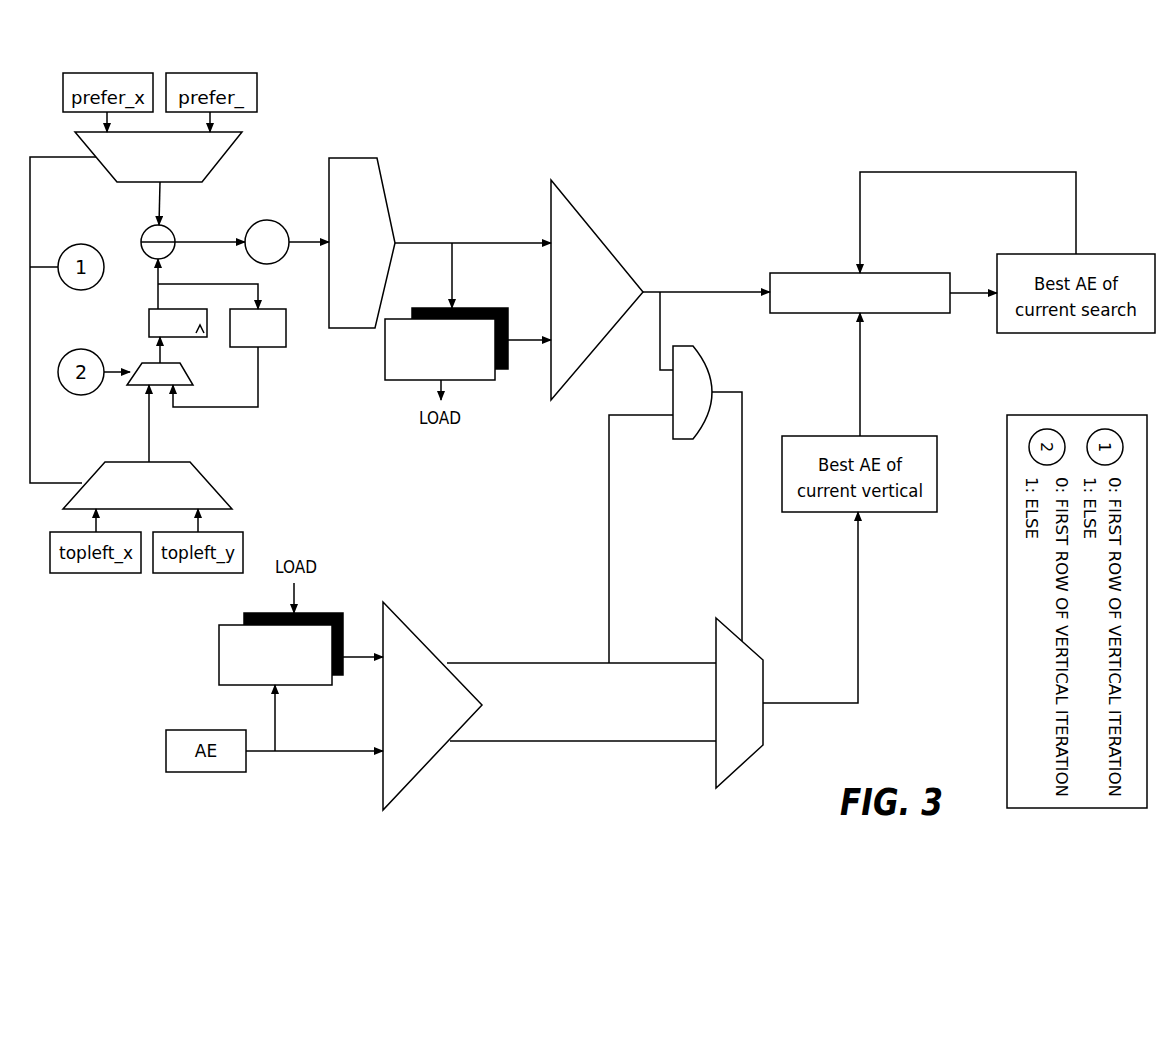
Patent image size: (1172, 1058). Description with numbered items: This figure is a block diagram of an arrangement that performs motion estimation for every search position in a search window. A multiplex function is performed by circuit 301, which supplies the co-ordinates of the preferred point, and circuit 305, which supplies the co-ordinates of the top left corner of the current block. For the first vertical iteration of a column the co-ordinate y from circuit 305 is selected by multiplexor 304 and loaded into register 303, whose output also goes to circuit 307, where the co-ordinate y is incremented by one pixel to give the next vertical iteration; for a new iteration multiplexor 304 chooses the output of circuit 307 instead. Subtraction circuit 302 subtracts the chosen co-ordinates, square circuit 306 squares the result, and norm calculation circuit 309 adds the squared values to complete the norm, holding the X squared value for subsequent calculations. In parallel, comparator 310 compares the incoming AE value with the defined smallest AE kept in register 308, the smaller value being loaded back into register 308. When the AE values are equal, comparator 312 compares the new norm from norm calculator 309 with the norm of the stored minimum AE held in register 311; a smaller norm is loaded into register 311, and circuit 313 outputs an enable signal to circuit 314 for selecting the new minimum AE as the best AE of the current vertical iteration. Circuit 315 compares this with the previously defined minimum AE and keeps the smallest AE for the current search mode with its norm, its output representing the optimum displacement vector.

The multiplexor circuit 301 is at (223, 163).
The subtraction circuit 302 is at (146, 232).
The register 303 is at (149, 318).
The multiplexor 304 is at (138, 388).
The multiplexor circuit 305 is at (212, 481).
The square circuit 306 is at (253, 226).
The increment circuit 307 is at (286, 330).
The register 308 is at (219, 655).
The norm calculation circuit 309 is at (356, 158).
The comparator 310 is at (394, 612).
The register 311 is at (480, 380).
The comparator 312 is at (583, 215).
The enable circuit 313 is at (688, 440).
The selection circuit 314 is at (716, 643).
The keep lowest circuit 315 is at (818, 273).